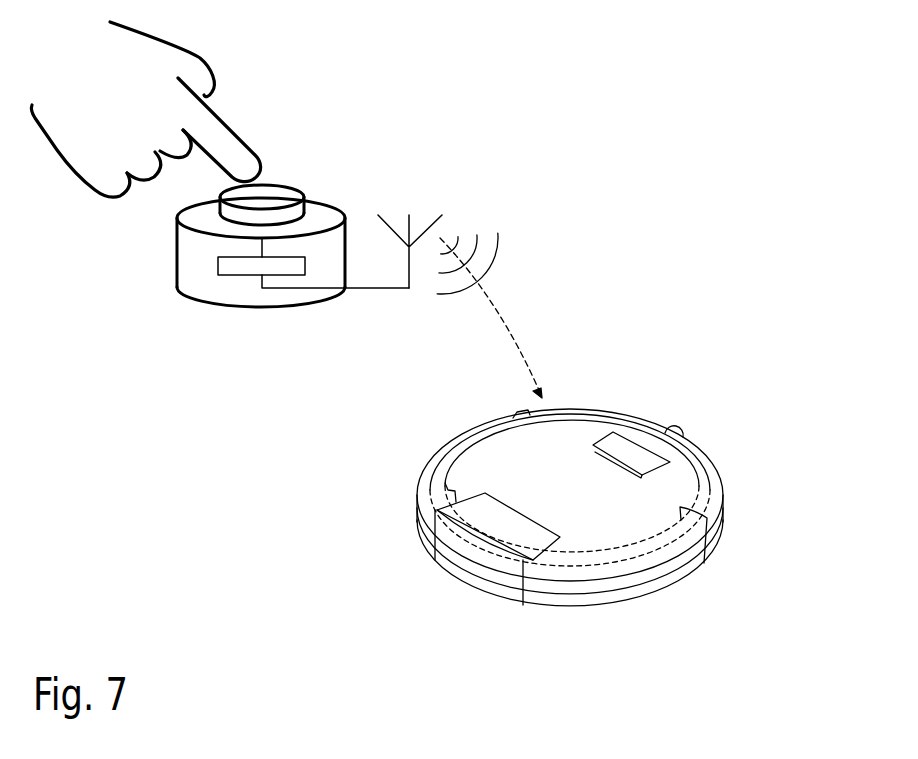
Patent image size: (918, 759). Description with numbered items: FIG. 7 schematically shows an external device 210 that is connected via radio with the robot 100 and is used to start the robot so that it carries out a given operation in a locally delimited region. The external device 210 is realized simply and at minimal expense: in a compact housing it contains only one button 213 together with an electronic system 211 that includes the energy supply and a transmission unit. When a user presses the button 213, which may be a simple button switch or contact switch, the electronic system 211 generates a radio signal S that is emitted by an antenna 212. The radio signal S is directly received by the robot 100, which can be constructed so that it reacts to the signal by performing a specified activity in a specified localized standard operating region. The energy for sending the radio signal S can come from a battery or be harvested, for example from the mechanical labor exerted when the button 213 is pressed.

The robot 100 is at (748, 418).
The external device 210 is at (182, 320).
The electronic system 211 is at (218, 266).
The antenna 212 is at (421, 184).
The button 213 is at (278, 196).
The radio signal S is at (491, 318).